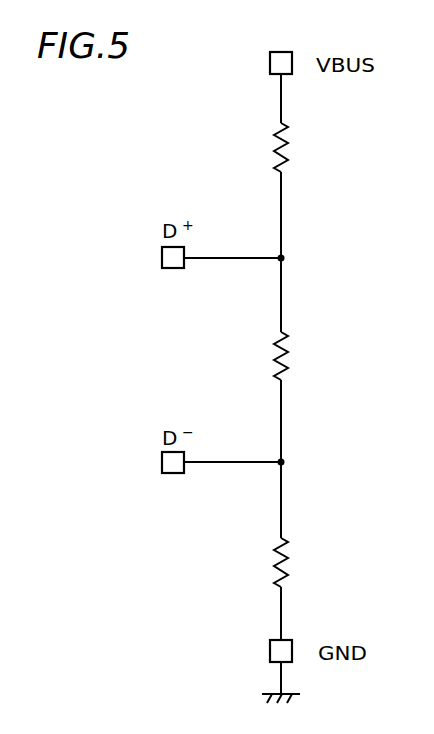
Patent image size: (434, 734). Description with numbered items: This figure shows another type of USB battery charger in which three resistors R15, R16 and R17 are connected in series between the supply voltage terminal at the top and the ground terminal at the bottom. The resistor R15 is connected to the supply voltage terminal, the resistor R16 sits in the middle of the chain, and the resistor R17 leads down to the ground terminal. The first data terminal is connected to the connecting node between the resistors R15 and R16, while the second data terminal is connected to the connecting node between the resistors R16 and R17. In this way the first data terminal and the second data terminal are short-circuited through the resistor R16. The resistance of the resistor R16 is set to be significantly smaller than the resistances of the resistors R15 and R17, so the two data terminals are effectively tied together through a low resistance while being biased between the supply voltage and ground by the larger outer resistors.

The resistor R15 is at (324, 147).
The resistor R16 is at (319, 356).
The resistor R17 is at (319, 562).